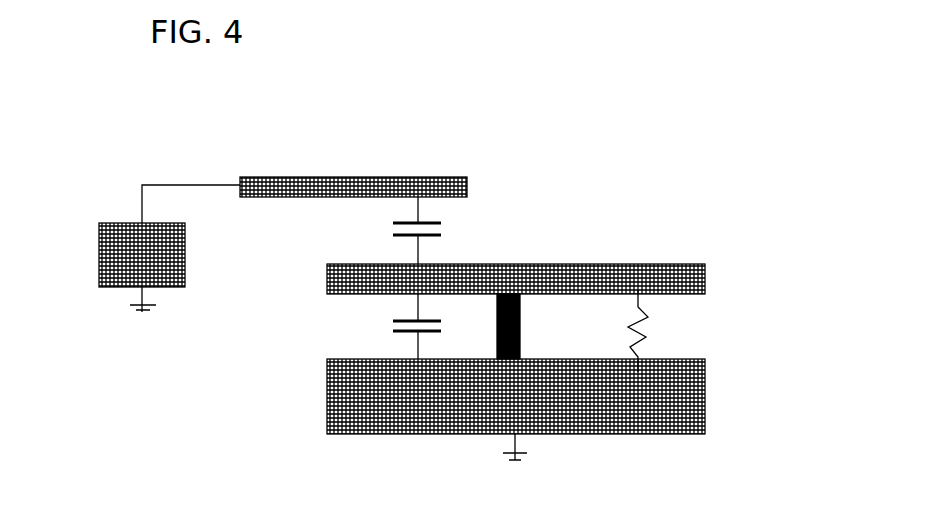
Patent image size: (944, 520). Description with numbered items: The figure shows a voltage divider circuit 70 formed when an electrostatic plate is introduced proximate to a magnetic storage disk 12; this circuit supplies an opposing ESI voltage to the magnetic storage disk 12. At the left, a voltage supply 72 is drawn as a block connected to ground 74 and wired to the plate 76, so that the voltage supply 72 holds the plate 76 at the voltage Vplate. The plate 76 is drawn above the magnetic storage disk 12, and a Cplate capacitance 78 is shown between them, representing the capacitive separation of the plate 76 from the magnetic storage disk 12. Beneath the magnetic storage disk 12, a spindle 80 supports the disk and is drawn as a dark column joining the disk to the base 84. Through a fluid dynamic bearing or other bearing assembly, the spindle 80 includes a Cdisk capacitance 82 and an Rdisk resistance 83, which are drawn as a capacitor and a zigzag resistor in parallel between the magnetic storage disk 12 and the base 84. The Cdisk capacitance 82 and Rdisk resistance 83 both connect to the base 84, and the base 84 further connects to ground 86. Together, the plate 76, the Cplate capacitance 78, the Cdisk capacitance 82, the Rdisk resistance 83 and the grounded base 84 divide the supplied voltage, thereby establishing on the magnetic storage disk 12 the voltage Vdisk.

The voltage divider circuit 70 is at (732, 111).
The voltage supply 72 is at (98, 256).
The ground 74 is at (133, 308).
The plate 76 is at (418, 177).
The Cplate capacitance 78 is at (443, 227).
The magnetic storage disk 12 is at (683, 264).
The Cdisk capacitance 82 is at (400, 327).
The spindle 80 is at (521, 326).
The Rdisk resistance 83 is at (642, 337).
The base 84 is at (375, 400).
The ground 86 is at (512, 456).